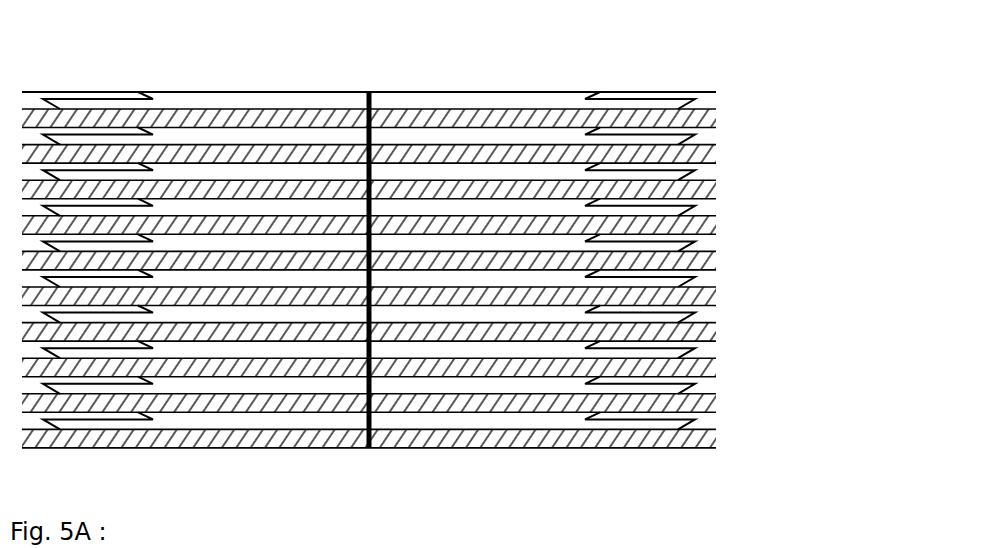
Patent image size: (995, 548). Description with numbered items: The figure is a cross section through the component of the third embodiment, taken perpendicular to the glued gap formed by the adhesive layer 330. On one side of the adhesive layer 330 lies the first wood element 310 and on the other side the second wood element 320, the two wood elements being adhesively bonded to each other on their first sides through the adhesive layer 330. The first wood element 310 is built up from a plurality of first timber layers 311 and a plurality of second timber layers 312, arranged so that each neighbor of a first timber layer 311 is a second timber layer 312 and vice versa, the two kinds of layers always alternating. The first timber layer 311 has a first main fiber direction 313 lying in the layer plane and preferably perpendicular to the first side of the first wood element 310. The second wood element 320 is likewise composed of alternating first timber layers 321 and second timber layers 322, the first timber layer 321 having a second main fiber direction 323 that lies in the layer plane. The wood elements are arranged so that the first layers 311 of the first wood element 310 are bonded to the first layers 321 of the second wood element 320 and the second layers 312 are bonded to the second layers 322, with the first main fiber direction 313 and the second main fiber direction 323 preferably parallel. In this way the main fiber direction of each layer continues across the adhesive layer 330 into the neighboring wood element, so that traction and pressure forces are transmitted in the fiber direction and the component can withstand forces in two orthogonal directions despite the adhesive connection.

The first wood element 310 is at (195, 224).
The first timber layer 311 is at (211, 100).
The second timber layer 312 is at (297, 112).
The first main fiber direction 313 is at (112, 100).
The second wood element 320 is at (542, 224).
The first timber layer 321 is at (472, 100).
The second timber layer 322 is at (557, 115).
The second main fiber direction 323 is at (670, 100).
The adhesive layer 330 is at (370, 92).